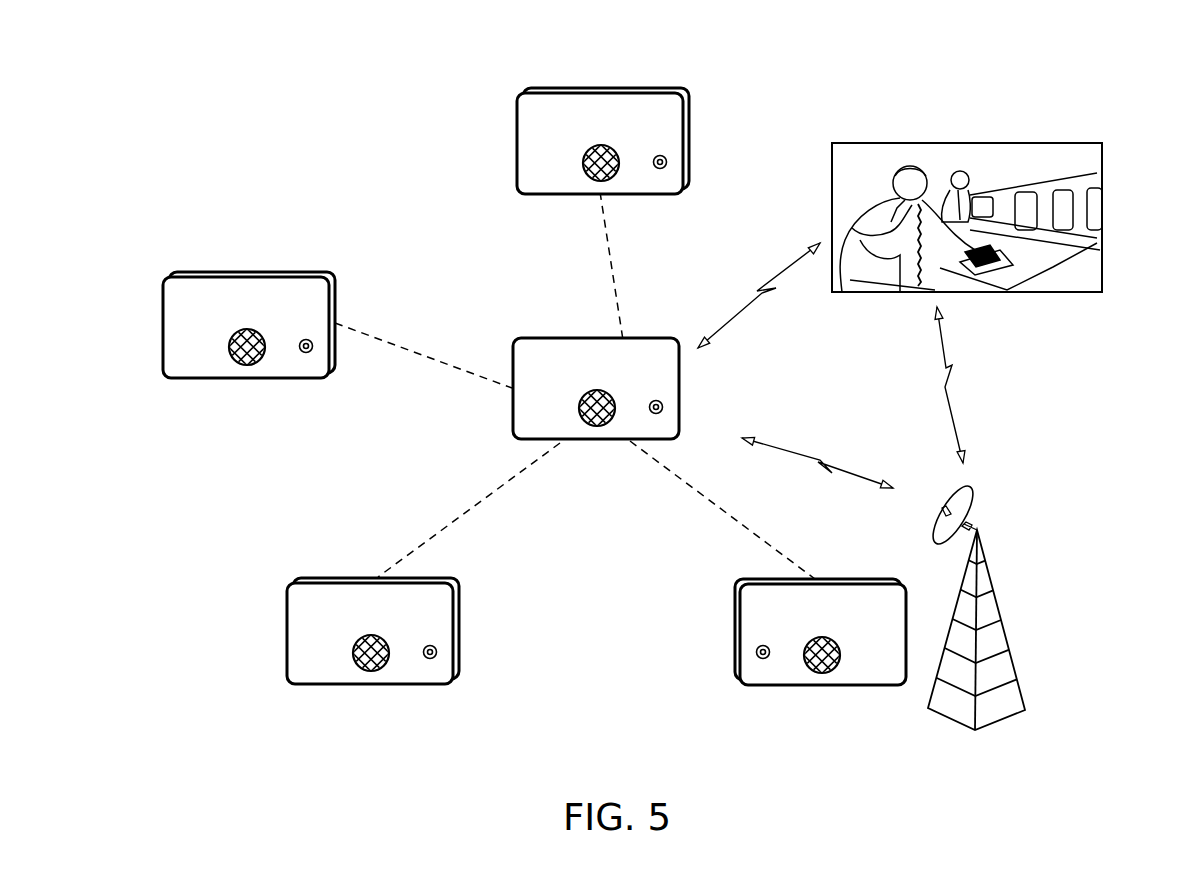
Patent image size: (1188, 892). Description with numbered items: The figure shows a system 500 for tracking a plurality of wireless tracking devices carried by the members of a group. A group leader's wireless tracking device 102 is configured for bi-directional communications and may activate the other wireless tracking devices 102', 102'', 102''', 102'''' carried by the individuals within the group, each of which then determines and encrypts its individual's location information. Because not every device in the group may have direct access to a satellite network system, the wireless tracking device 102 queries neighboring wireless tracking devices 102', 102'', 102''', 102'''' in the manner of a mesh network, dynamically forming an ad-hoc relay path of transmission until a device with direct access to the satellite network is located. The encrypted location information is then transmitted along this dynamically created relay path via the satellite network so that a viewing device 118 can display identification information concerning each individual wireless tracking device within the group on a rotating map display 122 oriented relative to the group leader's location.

The system of tracking a plurality of wireless tracking devices 500 is at (326, 122).
The wireless tracking device 102 is at (373, 665).
The wireless tracking device 102' is at (249, 362).
The wireless tracking device 102'' is at (593, 171).
The wireless tracking device 102''' is at (820, 665).
The wireless tracking device 102'''' is at (548, 398).
The viewing device 118 is at (990, 568).
The rotating map display 122 is at (1102, 262).